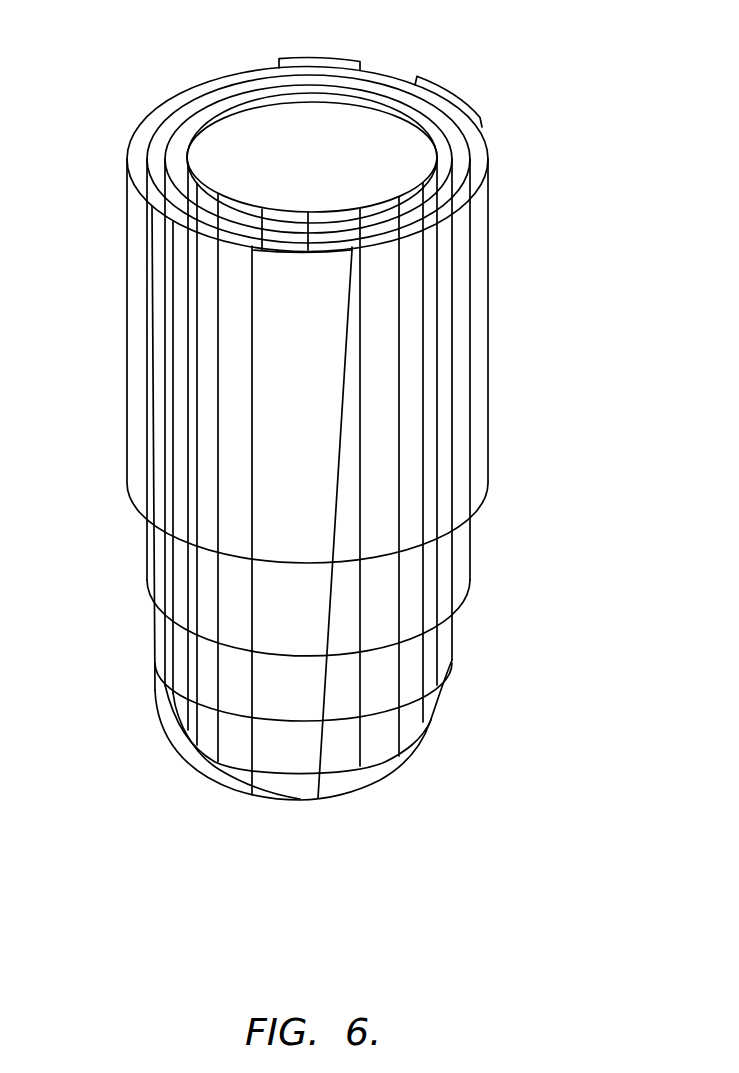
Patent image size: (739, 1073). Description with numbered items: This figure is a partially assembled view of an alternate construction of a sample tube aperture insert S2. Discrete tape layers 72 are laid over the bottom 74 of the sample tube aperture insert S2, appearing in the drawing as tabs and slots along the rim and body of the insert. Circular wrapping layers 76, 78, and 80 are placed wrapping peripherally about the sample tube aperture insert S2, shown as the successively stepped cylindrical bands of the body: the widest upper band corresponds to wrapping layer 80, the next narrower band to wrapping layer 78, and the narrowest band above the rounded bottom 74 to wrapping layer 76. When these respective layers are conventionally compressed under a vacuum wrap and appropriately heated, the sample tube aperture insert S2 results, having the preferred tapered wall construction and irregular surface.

The discrete tape layers 72 is at (325, 59).
The sample tube aperture insert S2 is at (488, 340).
The circular wrapping layer 80 is at (488, 483).
The circular wrapping layer 78 is at (462, 603).
The circular wrapping layer 76 is at (443, 675).
The bottom 74 is at (212, 767).